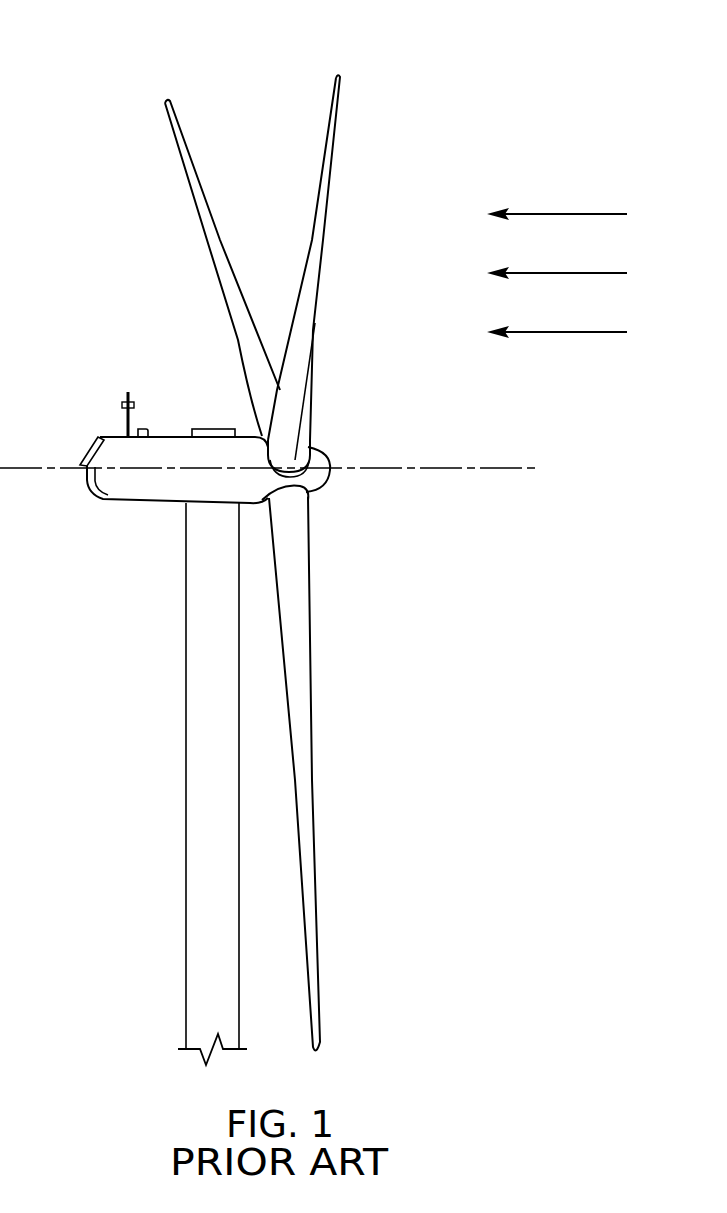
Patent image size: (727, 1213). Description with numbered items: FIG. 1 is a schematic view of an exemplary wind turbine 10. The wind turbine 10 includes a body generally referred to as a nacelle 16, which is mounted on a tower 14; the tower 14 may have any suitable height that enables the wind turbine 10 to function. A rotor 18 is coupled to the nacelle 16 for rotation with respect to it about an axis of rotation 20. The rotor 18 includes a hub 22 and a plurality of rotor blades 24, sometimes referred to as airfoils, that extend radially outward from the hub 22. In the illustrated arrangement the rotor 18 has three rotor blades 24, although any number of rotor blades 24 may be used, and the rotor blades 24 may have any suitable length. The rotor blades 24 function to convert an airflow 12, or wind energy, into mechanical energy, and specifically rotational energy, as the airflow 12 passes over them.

The wind turbine 10 is at (222, 539).
The airflow 12 is at (557, 214).
The tower 14 is at (179, 728).
The nacelle 16 is at (120, 512).
The rotor 18 is at (285, 562).
The axis of rotation 20 is at (477, 470).
The hub 22 is at (332, 477).
The rotor blades 24 is at (183, 130).